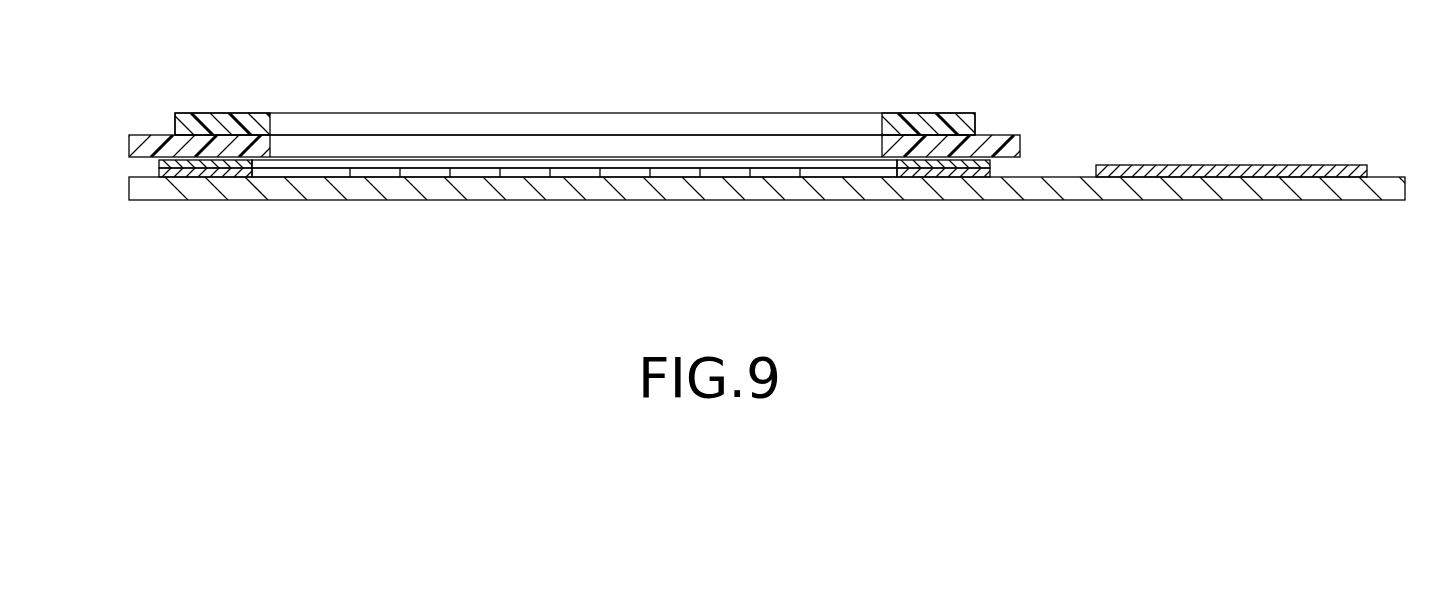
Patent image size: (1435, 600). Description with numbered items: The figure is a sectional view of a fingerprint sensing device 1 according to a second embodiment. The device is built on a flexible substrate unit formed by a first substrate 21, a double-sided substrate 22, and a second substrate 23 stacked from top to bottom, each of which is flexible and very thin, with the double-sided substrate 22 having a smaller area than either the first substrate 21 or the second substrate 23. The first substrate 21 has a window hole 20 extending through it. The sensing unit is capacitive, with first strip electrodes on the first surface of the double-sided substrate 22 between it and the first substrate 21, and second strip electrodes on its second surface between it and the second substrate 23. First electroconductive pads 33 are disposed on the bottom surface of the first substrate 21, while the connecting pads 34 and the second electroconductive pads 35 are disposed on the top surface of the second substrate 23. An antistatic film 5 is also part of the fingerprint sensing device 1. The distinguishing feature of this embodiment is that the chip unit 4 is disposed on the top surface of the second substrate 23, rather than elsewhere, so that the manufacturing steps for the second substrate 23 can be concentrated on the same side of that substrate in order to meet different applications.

The fingerprint sensing device 1 is at (152, 81).
The chip unit 4 is at (1245, 152).
The antistatic film 5 is at (940, 123).
The window hole 20 is at (337, 118).
The first substrate 21 is at (1018, 152).
The double-sided substrate 22 is at (816, 163).
The second substrate 23 is at (1388, 185).
The first electroconductive pads 33 is at (157, 164).
The connecting pads 34 is at (157, 176).
The second electroconductive pads 35 is at (473, 172).